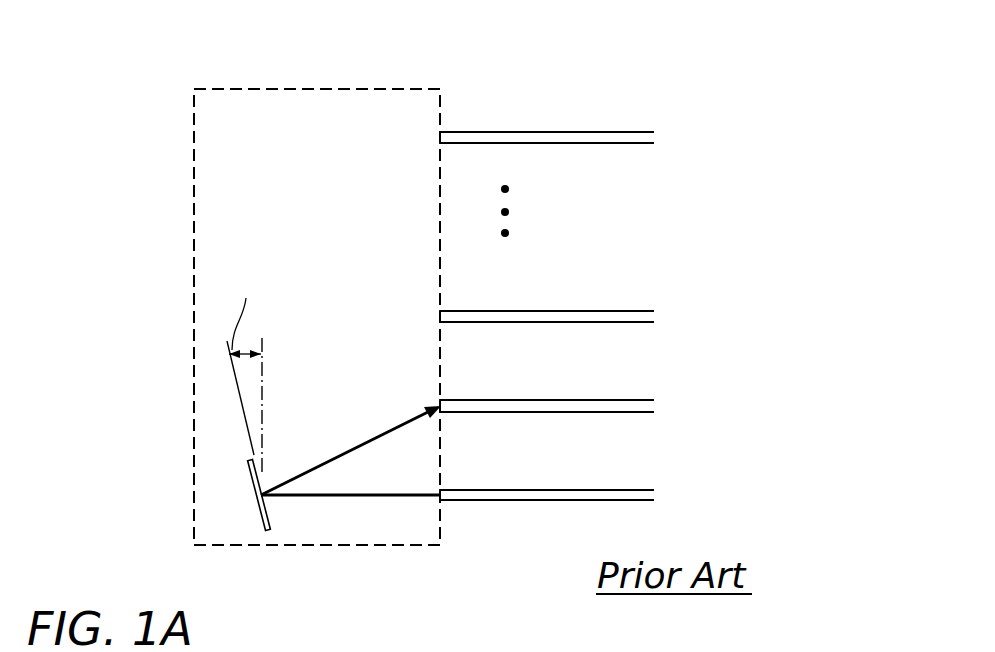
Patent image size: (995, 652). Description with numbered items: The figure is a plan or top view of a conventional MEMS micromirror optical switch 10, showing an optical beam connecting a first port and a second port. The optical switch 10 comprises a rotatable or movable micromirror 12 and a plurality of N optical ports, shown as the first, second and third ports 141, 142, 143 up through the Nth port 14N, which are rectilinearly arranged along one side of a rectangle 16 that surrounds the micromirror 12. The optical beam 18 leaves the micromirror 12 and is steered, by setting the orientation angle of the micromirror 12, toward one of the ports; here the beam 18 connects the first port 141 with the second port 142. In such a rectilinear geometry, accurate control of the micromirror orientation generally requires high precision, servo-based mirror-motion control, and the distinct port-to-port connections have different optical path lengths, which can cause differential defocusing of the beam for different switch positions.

The optical switch 10 is at (233, 62).
The micromirror 12 is at (270, 527).
The optical port 14N is at (452, 141).
The optical port 143 is at (452, 320).
The optical port 142 is at (452, 410).
The optical port 141 is at (452, 498).
The rectangle 16 is at (388, 88).
The deflected beam 18 is at (368, 432).